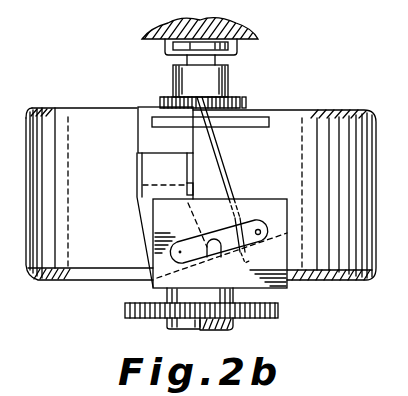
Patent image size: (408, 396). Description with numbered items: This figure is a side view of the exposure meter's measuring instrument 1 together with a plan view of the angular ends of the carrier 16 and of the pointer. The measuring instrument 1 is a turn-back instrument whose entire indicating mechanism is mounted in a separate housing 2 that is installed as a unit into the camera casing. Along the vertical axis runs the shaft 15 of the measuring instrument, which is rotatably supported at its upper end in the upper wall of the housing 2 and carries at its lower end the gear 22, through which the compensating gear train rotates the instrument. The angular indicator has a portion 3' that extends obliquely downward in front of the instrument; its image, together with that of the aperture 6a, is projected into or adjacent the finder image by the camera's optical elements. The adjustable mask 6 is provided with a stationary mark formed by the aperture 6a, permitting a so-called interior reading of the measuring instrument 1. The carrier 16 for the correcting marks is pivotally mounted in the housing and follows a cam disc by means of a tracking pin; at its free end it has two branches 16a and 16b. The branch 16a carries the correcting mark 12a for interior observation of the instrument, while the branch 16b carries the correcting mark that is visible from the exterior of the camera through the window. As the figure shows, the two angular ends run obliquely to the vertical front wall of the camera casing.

The measuring instrument 1 is at (319, 116).
The housing 2 is at (225, 30).
The shaft 15 is at (228, 80).
The branch 16b is at (143, 107).
The carrier 16 is at (138, 202).
The branch 16a is at (147, 170).
The portion of the indicator 3' is at (225, 180).
The mask 6 is at (283, 285).
The correcting mark 12a is at (213, 257).
The aperture 6a is at (259, 232).
The gear 22 is at (125, 310).